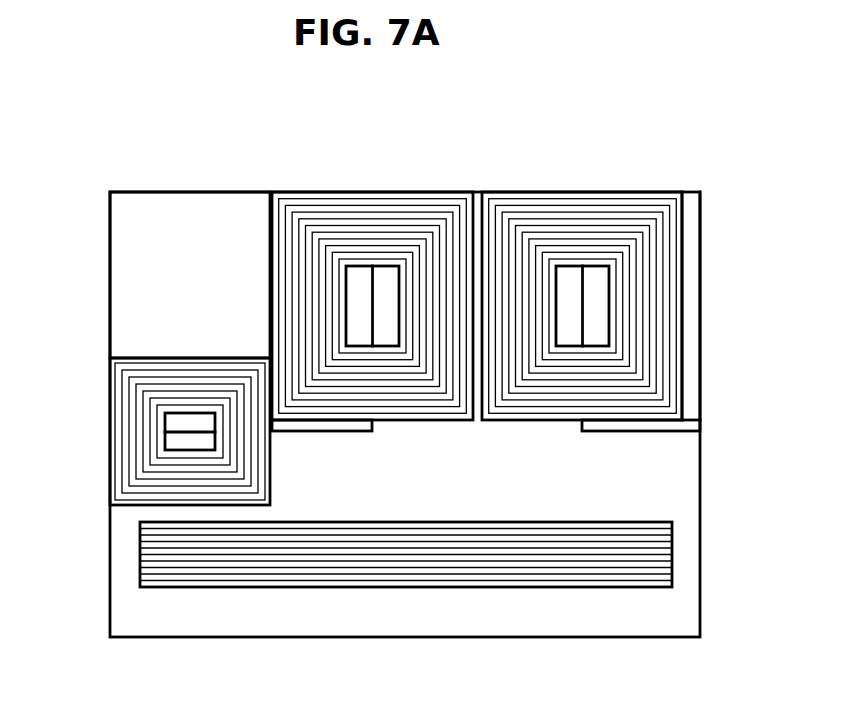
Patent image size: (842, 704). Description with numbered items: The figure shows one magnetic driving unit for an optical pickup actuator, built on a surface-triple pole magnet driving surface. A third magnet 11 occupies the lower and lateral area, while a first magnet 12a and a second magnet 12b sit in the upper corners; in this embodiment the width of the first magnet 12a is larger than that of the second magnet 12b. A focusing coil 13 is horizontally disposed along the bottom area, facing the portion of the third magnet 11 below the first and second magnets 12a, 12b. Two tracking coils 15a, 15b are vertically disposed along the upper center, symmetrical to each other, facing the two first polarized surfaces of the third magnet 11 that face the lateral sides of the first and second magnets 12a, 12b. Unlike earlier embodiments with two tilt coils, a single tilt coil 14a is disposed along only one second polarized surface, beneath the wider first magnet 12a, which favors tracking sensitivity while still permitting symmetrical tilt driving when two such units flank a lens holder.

The third magnet 11 is at (207, 622).
The first magnet 12a is at (189, 210).
The second magnet 12b is at (691, 203).
The focusing coil 13 is at (152, 560).
The tilt coil 14a is at (135, 420).
The tracking coil 15a is at (365, 205).
The tracking coil 15b is at (601, 205).